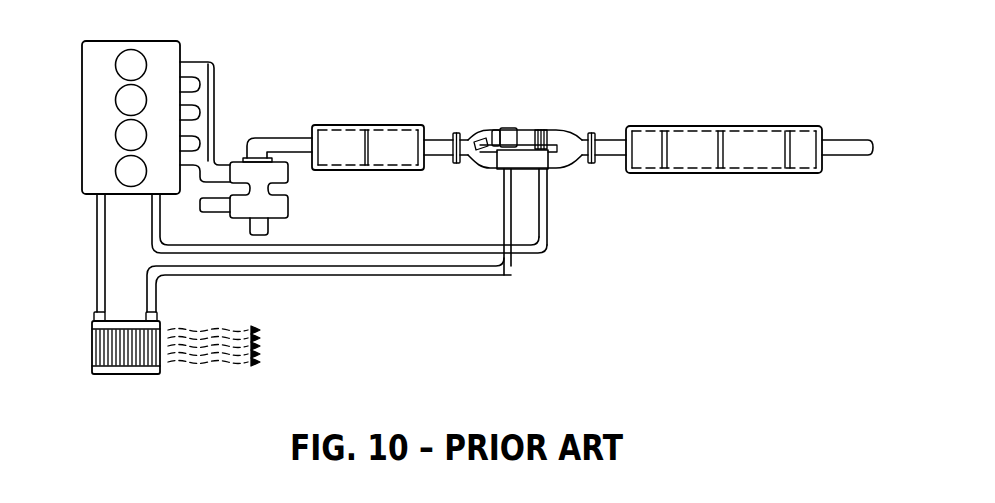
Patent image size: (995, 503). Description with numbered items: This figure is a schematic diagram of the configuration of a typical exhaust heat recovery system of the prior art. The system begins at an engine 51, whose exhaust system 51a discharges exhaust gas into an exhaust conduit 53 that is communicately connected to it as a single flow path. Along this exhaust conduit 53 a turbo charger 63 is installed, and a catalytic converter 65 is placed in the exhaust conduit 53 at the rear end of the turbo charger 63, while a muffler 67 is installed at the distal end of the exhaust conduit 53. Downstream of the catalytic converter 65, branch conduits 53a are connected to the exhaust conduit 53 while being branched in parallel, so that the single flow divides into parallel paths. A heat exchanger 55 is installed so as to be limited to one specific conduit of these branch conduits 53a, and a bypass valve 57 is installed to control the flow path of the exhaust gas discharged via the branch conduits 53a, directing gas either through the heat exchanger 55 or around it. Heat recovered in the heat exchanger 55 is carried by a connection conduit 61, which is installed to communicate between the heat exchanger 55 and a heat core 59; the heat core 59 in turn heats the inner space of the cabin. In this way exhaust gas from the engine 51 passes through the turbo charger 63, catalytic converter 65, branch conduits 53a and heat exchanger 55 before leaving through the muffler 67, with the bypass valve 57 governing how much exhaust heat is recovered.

The engine 51 is at (81, 117).
The exhaust system 51a is at (209, 98).
The exhaust conduit 53 is at (288, 138).
The branch conduits 53a is at (553, 166).
The heat exchanger 55 is at (523, 165).
The bypass valve 57 is at (496, 112).
The heat core 59 is at (124, 375).
The connection conduit 61 is at (100, 297).
The turbo charger 63 is at (300, 189).
The catalytic converter 65 is at (368, 124).
The muffler 67 is at (720, 126).